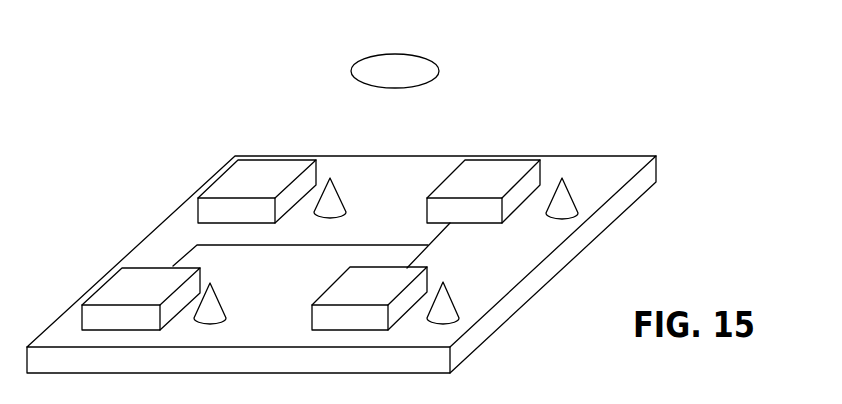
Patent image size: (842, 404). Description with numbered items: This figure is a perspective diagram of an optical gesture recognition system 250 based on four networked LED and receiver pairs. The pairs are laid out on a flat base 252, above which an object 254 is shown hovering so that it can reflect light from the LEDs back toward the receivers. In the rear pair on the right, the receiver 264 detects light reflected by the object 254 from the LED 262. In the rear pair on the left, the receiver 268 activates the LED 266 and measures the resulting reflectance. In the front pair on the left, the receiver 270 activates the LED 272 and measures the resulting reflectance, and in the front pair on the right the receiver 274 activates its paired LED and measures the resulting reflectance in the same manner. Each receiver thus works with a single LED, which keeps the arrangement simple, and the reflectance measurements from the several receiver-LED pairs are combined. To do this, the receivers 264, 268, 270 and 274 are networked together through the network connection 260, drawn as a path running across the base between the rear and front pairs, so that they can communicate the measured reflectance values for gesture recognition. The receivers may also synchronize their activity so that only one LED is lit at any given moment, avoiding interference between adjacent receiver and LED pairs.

The optical gesture recognition system 250 is at (583, 68).
The substrate plate 252 is at (562, 255).
The object 254 is at (422, 53).
The network connection 260 is at (297, 246).
The LED 262 is at (570, 188).
The receiver 264 is at (457, 192).
The LED 266 is at (337, 196).
The receiver 268 is at (232, 192).
The receiver 270 is at (115, 297).
The LED 272 is at (220, 307).
The receiver 274 is at (348, 297).